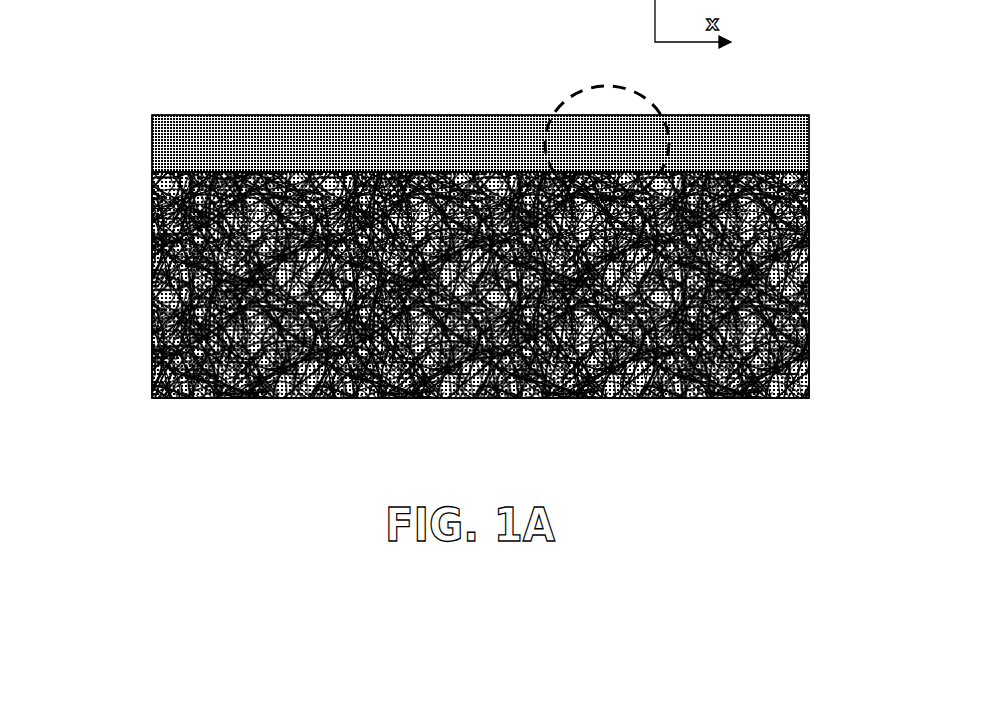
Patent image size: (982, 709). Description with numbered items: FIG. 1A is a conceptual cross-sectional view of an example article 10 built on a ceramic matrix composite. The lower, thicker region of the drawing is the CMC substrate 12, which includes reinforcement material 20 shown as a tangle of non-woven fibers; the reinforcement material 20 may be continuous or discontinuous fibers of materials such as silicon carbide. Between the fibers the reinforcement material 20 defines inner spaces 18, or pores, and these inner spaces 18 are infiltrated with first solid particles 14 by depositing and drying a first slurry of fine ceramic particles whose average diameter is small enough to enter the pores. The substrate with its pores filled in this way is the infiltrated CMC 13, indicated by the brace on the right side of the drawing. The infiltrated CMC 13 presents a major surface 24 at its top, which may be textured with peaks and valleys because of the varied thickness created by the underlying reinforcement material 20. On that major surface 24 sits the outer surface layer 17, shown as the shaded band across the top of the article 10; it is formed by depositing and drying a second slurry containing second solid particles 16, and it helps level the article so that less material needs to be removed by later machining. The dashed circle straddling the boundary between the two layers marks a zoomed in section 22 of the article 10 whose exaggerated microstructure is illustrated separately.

The article 10 is at (464, 246).
The CMC substrate 12 is at (137, 172).
The infiltrated CMC 13 is at (822, 398).
The first solid particles 14 is at (298, 178).
The second solid particles 16 is at (330, 132).
The outer surface layer 17 is at (137, 115).
The inner spaces 18 is at (228, 398).
The reinforcement material 20 is at (660, 398).
The zoomed in section 22 is at (559, 101).
The major surface 24 is at (772, 172).